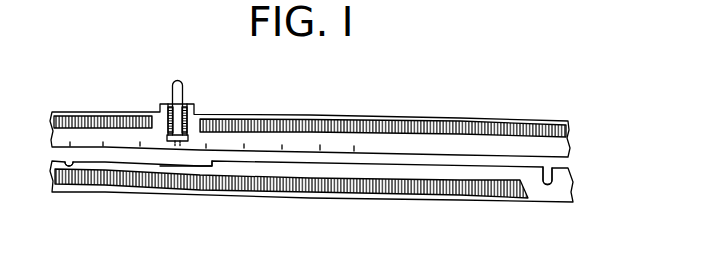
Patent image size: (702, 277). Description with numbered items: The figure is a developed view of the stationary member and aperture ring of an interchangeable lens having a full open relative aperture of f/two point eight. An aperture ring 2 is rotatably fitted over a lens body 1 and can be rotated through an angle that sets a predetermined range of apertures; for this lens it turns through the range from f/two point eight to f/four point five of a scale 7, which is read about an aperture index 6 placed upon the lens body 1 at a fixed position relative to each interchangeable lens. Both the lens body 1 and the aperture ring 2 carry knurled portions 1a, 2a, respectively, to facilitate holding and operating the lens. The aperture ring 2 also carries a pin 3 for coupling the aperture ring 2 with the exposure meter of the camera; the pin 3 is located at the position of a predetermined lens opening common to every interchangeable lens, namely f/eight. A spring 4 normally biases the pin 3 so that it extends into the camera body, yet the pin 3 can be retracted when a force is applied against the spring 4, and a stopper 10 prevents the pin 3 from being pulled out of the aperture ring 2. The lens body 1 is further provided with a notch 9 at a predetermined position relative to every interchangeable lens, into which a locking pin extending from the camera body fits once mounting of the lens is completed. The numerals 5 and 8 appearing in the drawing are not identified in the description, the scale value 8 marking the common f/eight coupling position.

The lens body 1 is at (296, 169).
The knurled portion 1a is at (444, 192).
The aperture ring 2 is at (418, 142).
The knurled portion 2a is at (465, 130).
The pin 3 is at (181, 79).
The spring 4 is at (187, 111).
The aperture scale 5 is at (79, 133).
The aperture index 6 is at (70, 165).
The scale 7 is at (113, 142).
The recess 8 is at (183, 153).
The notch 9 is at (546, 182).
The stopper 10 is at (173, 143).